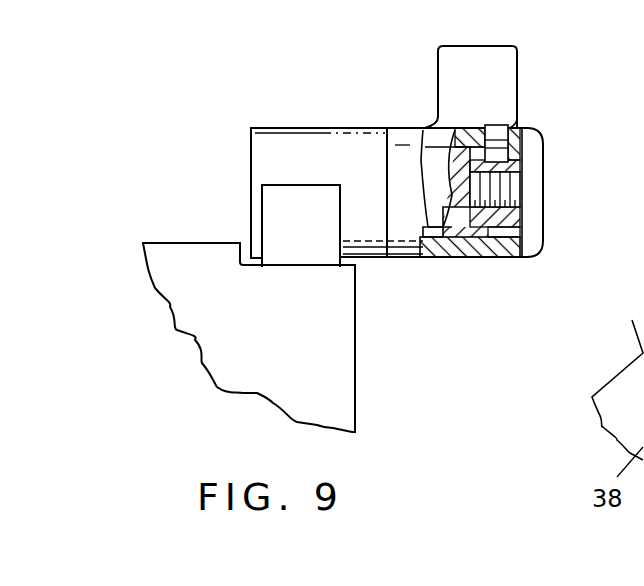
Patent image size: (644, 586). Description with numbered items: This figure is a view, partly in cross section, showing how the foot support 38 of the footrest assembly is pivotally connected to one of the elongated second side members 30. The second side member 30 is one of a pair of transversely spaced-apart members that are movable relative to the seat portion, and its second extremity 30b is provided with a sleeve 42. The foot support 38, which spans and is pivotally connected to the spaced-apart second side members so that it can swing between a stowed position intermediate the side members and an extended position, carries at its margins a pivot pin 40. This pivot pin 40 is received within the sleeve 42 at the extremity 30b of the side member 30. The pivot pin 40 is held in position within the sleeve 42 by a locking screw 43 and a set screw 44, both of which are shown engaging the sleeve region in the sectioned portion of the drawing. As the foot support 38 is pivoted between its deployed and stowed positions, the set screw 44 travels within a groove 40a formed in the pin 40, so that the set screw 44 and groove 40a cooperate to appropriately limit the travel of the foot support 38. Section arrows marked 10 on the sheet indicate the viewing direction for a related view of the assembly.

The section view arrows 10 is at (437, 15).
The second side member 30 is at (455, 64).
The second extremity 30b is at (470, 117).
The foot support 38 is at (260, 377).
The pivot pin 40 is at (273, 140).
The groove 40a is at (498, 258).
The sleeve 42 is at (443, 258).
The locking screw 43 is at (518, 190).
The set screw 44 is at (503, 120).